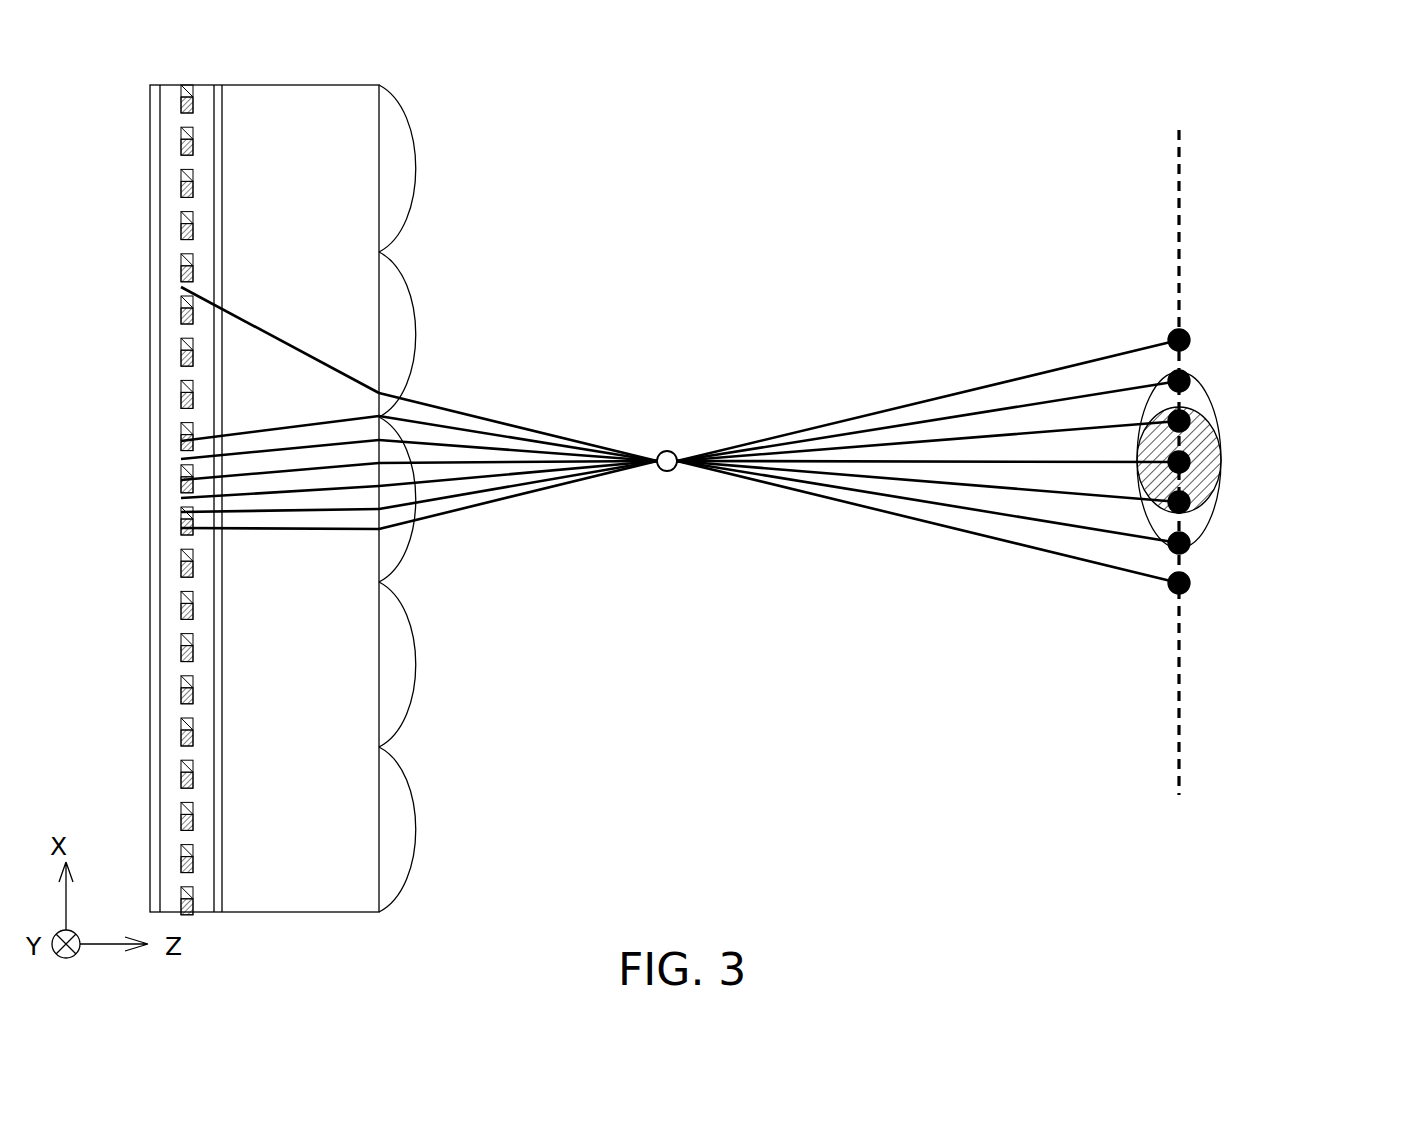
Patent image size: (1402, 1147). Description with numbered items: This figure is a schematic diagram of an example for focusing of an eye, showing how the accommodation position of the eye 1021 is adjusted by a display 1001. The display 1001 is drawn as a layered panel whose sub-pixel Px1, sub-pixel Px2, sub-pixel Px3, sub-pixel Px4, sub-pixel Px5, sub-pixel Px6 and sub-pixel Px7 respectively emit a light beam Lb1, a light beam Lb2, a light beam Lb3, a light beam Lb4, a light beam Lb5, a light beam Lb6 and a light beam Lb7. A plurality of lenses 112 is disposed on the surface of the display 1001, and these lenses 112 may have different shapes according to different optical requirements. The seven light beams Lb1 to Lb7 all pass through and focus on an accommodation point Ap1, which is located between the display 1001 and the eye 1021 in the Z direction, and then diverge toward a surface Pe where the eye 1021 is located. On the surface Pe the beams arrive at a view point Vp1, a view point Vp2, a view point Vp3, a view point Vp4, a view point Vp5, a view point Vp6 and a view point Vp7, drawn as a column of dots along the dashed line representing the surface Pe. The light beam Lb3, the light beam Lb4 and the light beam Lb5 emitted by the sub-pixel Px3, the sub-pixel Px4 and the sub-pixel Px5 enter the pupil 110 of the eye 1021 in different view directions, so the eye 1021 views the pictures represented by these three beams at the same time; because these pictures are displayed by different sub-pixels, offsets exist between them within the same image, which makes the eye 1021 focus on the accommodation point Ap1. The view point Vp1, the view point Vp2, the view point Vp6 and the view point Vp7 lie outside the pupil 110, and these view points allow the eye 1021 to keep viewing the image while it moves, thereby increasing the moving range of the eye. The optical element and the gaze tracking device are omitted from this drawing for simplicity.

The display 1001 is at (437, 120).
The lenses 112 is at (410, 165).
The surface Pe is at (1182, 150).
The sub-pixel Px1 is at (181, 291).
The sub-pixel Px2 is at (181, 441).
The sub-pixel Px3 is at (181, 461).
The sub-pixel Px4 is at (181, 484).
The sub-pixel Px5 is at (181, 501).
The sub-pixel Px6 is at (181, 517).
The sub-pixel Px7 is at (181, 535).
The light beam Lb1 is at (465, 412).
The light beam Lb2 is at (515, 437).
The light beam Lb3 is at (557, 453).
The light beam Lb4 is at (605, 462).
The light beam Lb5 is at (557, 470).
The light beam Lb6 is at (515, 486).
The light beam Lb7 is at (465, 508).
The accommodation point Ap1 is at (667, 450).
The view point Vp1 is at (1190, 583).
The view point Vp2 is at (1190, 543).
The view point Vp3 is at (1190, 503).
The view point Vp4 is at (1190, 461).
The view point Vp5 is at (1190, 420).
The view point Vp6 is at (1190, 380).
The view point Vp7 is at (1190, 338).
The eye 1021 is at (1190, 463).
The pupil 110 is at (1205, 480).